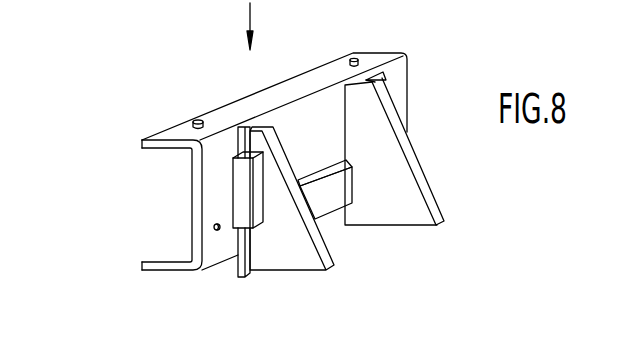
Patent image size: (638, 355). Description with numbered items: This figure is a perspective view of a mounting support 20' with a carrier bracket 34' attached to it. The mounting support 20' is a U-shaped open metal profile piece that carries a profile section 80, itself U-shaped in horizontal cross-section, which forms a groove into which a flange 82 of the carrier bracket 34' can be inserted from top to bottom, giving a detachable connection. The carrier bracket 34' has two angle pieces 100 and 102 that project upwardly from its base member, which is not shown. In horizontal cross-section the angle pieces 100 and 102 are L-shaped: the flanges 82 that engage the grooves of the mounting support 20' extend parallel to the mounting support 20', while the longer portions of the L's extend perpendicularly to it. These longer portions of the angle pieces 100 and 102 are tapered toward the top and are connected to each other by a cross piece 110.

The mounting support 20' is at (232, 161).
The carrier bracket 34' is at (295, 164).
The profile section 80 is at (242, 188).
The flange 82 is at (244, 128).
The angle piece 100 is at (410, 205).
The angle piece 102 is at (283, 253).
The cross piece 110 is at (325, 188).